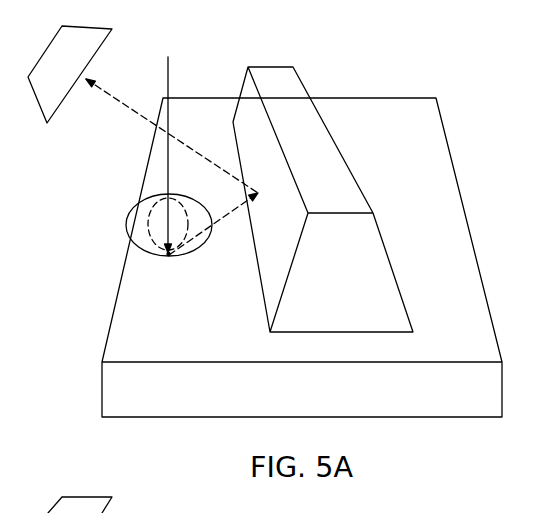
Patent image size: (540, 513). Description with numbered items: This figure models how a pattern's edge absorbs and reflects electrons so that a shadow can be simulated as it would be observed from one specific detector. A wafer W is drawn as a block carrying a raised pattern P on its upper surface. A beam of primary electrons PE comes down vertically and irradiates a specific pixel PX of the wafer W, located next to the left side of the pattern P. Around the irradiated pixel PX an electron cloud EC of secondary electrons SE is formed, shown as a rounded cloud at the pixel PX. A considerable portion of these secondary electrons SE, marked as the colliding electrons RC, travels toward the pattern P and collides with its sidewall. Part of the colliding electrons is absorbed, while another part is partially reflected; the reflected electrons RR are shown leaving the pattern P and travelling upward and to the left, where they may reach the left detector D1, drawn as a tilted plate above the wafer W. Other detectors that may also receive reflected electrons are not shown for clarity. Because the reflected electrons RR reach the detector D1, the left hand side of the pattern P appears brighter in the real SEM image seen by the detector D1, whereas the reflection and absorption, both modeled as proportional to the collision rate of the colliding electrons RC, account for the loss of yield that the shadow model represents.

The left detector D1 is at (70, 74).
The primary electrons PE is at (167, 145).
The reflected electrons RR is at (172, 136).
The secondary electrons SE is at (221, 170).
The electron cloud EC is at (129, 213).
The colliding electrons RC is at (213, 224).
The pixel PX is at (168, 254).
The pattern P is at (323, 199).
The wafer W is at (302, 257).